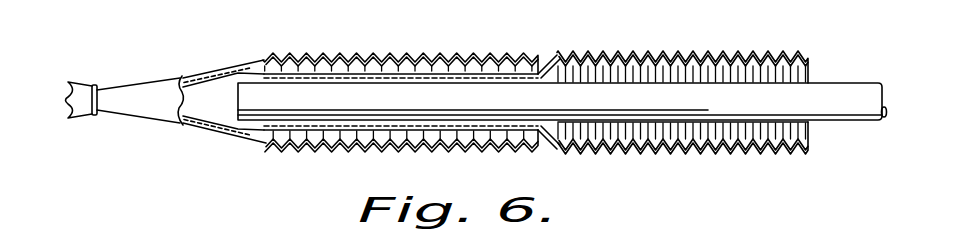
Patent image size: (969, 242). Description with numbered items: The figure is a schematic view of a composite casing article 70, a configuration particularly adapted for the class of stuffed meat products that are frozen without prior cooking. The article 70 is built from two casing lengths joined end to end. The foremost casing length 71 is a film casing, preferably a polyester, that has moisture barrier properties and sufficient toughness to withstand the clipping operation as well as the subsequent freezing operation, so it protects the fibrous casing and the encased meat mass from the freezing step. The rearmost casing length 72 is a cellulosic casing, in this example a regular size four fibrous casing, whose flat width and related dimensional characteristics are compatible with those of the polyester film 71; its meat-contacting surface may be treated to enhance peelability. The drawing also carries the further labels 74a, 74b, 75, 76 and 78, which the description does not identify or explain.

The casing article 70 is at (547, 38).
The foremost casing length 71 is at (336, 24).
The rearmost casing length 72 is at (744, 52).
The inner tube section 74a is at (368, 130).
The inner tube section 74b is at (738, 126).
The inner liner 75 is at (426, 64).
The tapered tip section 76 is at (200, 73).
The tip 78 is at (94, 85).